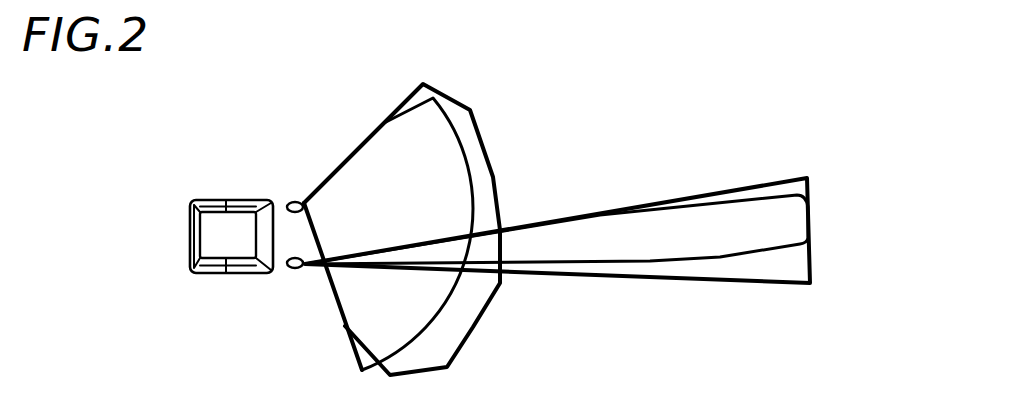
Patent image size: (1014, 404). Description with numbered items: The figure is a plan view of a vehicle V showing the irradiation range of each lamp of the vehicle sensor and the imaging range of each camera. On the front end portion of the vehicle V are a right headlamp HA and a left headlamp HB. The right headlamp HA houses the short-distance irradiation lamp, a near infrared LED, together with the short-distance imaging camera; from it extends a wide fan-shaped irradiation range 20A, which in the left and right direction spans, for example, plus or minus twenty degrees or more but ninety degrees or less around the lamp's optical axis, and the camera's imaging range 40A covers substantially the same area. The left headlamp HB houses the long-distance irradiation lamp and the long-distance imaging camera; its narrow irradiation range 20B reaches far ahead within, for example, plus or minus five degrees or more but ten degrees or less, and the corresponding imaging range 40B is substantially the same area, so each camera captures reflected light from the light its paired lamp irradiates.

The vehicle V is at (188, 238).
The right headlamp HA is at (292, 201).
The left headlamp HB is at (296, 270).
The irradiation range 20A is at (443, 308).
The irradiation range 20B is at (733, 283).
The imaging range 40A is at (487, 147).
The imaging range 40B is at (768, 182).